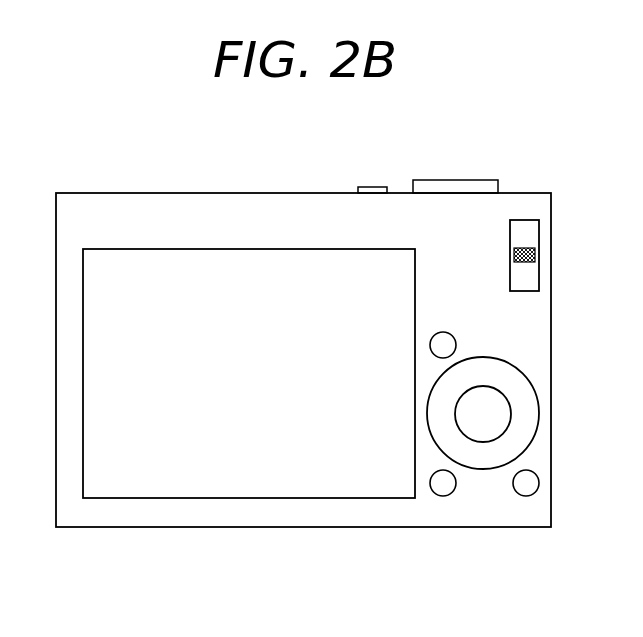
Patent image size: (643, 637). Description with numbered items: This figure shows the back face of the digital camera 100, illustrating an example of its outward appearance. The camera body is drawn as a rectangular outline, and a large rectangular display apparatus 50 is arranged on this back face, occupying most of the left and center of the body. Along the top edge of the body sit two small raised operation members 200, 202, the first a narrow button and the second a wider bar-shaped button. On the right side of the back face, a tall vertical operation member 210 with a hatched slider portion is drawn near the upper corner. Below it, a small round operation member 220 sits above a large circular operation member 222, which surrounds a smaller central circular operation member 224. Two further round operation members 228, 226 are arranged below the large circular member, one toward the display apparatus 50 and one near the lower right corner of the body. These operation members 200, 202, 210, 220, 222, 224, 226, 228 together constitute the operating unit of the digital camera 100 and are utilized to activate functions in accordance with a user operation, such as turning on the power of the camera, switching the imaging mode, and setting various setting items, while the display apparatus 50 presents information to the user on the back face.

The digital camera 100 is at (197, 193).
The display apparatus 50 is at (160, 487).
The operation member 200 is at (376, 187).
The operation member 202 is at (468, 180).
The operation member 210 is at (539, 230).
The operation member 220 is at (450, 334).
The operation member 222 is at (500, 367).
The operation member 224 is at (505, 412).
The operation member 226 is at (524, 488).
The operation member 228 is at (440, 488).